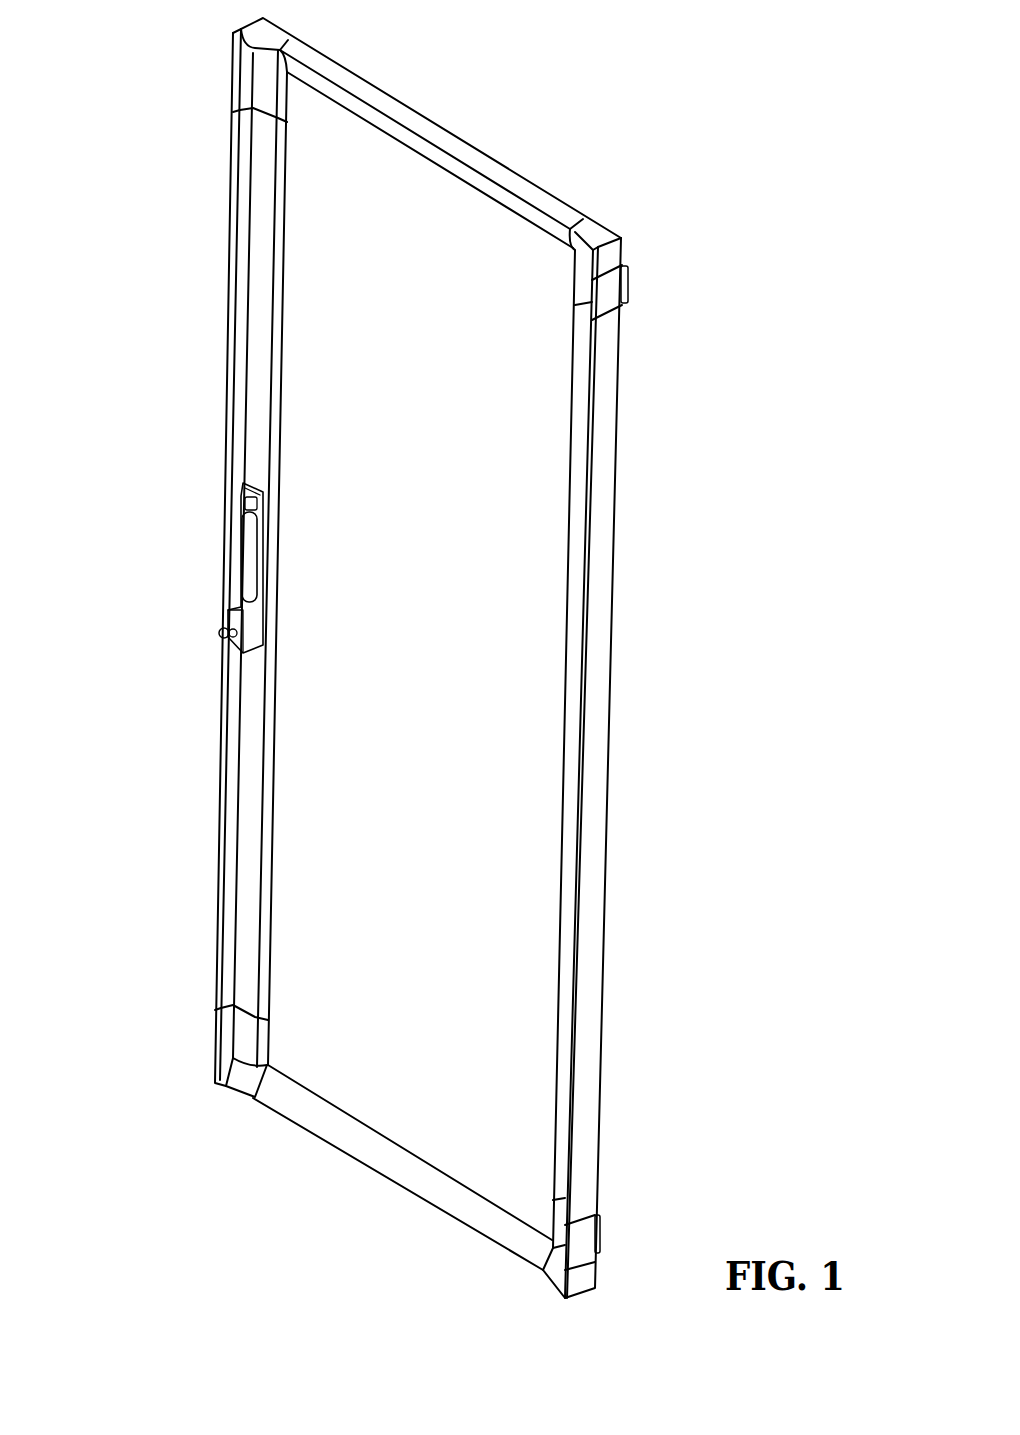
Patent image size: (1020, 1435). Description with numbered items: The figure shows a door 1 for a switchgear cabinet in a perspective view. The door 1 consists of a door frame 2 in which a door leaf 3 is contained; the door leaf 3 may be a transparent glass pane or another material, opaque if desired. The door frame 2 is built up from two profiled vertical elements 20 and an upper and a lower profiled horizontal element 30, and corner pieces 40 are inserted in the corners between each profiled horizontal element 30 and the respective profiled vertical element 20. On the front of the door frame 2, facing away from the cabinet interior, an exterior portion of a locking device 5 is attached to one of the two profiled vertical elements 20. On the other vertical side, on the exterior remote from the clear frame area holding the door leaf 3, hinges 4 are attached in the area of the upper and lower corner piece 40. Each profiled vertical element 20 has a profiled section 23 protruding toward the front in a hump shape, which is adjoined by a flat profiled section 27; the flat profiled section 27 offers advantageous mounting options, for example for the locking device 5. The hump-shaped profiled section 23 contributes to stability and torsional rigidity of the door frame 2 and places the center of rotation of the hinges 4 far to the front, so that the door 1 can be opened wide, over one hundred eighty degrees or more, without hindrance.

The door 1 is at (146, 817).
The door frame 2 is at (606, 968).
The door leaf 3 is at (550, 512).
The hinges 4 is at (610, 292).
The locking device 5 is at (242, 560).
The profiled vertical element 20 is at (602, 635).
The hump-shaped profiled section 23 is at (228, 320).
The flat profiled section 27 is at (258, 432).
The profiled horizontal element 30 is at (552, 205).
The corner piece 40 is at (616, 247).